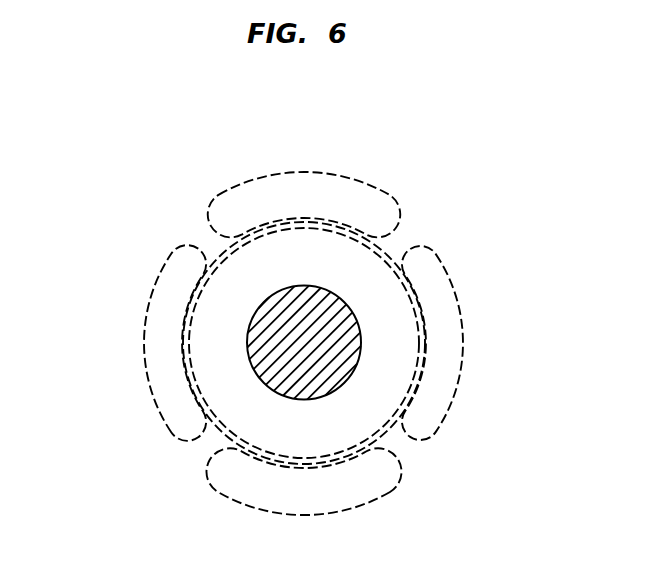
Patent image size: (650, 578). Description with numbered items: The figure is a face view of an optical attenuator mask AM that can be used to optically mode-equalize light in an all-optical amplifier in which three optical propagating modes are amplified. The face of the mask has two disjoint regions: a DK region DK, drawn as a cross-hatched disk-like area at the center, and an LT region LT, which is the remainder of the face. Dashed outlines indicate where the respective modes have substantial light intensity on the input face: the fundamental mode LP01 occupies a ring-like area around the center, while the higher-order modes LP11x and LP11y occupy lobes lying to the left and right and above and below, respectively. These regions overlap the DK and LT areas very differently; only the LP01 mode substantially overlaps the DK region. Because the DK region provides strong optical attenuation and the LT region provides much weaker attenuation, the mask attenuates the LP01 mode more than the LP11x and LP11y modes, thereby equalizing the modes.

The optical attenuator mask AM is at (57, 137).
The LT region LT is at (158, 226).
The LP01 optical propagating mode LP01 is at (304, 343).
The DK region DK is at (317, 357).
The LP11x optical propagating mode LP11x is at (470, 272).
The LP11y optical propagating mode LP11y is at (323, 173).